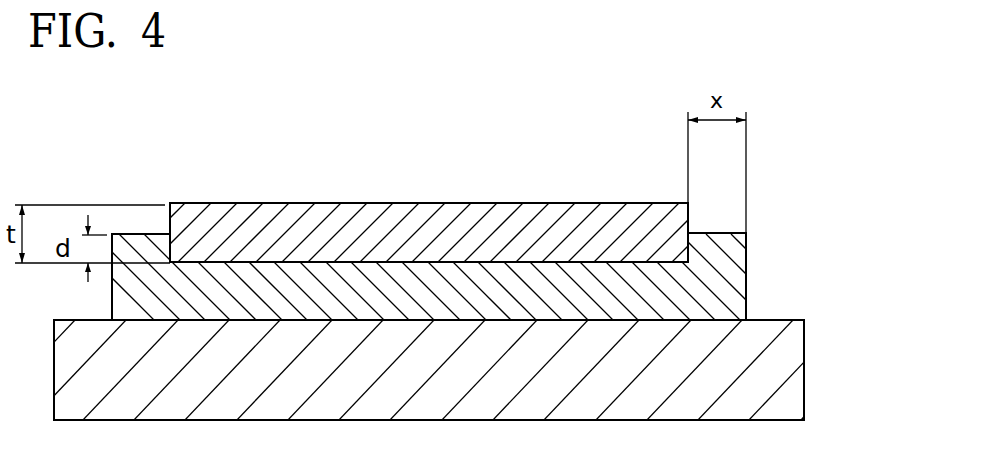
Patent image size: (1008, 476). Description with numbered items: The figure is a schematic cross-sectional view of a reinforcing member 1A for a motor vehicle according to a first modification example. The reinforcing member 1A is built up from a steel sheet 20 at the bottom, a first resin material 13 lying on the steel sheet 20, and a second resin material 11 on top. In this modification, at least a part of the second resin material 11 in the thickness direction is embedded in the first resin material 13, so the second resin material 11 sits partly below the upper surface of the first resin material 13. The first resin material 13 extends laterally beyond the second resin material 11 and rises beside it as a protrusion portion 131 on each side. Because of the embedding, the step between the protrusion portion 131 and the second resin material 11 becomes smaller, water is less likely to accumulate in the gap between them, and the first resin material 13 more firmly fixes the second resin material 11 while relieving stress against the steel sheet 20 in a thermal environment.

The reinforcing member 1A is at (869, 140).
The second resin material 11 is at (427, 203).
The first resin material 13 is at (746, 278).
The protrusion portion 131 is at (112, 294).
The steel sheet 20 is at (804, 370).